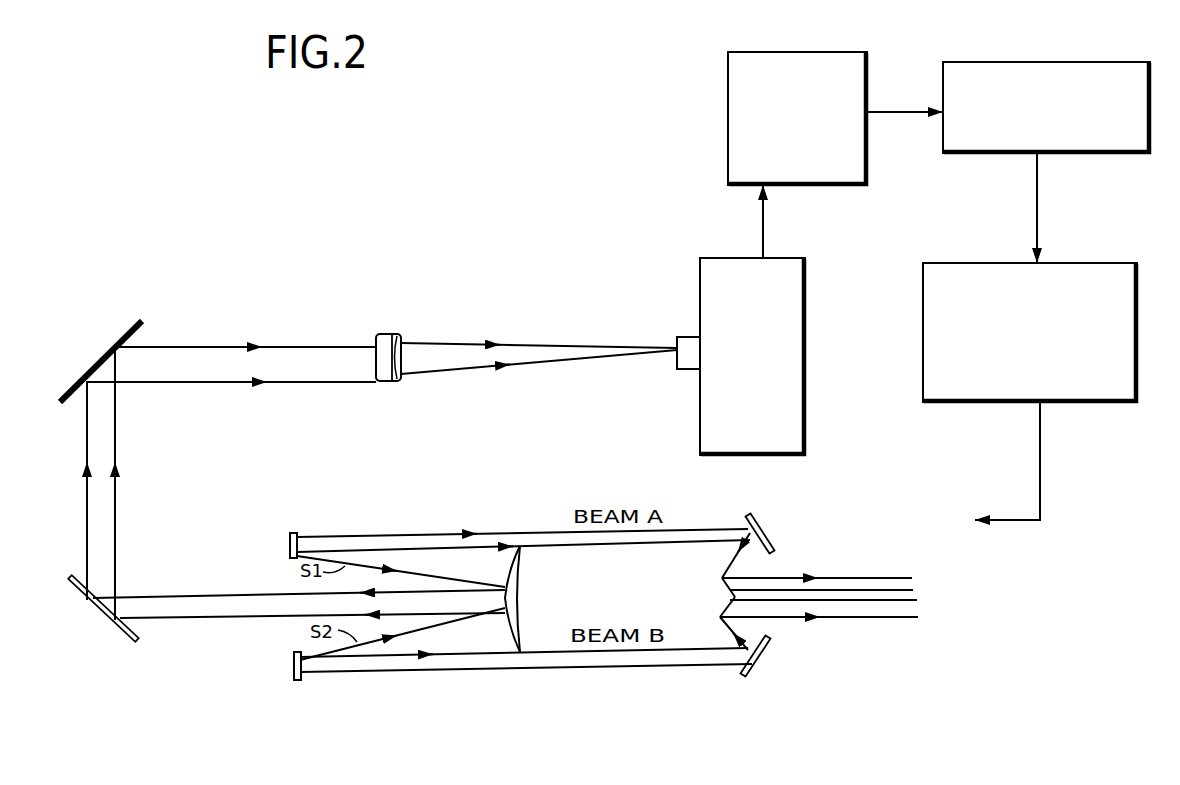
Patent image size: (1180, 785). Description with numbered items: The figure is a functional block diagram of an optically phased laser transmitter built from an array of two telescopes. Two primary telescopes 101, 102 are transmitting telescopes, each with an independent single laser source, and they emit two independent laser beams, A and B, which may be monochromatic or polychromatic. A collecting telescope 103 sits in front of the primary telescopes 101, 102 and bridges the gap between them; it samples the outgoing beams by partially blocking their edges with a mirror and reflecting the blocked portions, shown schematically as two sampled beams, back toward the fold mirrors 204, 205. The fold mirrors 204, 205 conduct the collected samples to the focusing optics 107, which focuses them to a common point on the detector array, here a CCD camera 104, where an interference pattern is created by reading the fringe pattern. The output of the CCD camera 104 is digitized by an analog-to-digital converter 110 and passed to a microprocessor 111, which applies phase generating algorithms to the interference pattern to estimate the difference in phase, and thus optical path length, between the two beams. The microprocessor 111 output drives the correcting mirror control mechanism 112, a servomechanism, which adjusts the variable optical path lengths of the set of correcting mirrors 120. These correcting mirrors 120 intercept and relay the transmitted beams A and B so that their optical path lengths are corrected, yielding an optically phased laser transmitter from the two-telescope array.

The analog-to-digital converter 110 is at (800, 52).
The microprocessor 111 is at (1050, 62).
The correcting mirror control mechanism 112 is at (1090, 263).
The CCD camera 104 is at (790, 258).
The focusing optics 107 is at (388, 381).
The fold mirror 205 is at (100, 355).
The fold mirror 204 is at (100, 612).
The primary telescope 101 is at (293, 533).
The primary telescope 102 is at (297, 680).
The collecting telescope 103 is at (510, 598).
The set of correcting mirrors 120 is at (844, 589).